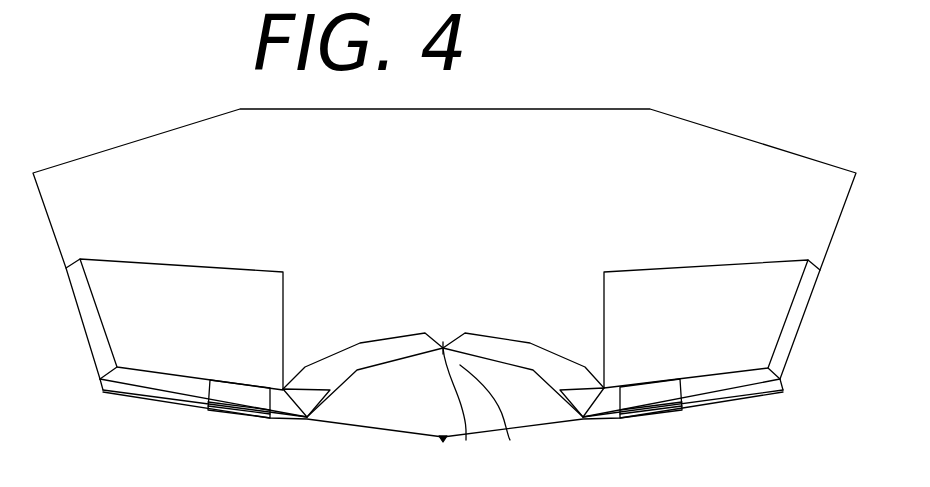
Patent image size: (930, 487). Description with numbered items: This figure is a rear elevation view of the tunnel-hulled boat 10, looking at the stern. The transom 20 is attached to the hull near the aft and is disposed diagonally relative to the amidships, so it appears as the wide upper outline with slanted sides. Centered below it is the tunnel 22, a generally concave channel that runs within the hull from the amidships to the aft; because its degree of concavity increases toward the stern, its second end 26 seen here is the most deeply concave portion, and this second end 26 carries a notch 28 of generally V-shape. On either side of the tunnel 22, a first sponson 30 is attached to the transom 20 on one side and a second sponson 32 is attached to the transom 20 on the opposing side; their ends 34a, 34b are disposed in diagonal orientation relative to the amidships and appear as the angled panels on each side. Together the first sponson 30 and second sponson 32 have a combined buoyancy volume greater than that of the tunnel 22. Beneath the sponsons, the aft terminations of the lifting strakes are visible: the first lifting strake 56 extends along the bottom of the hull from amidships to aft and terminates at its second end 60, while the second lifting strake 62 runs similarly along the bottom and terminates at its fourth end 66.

The tunnel-hulled boat 10 is at (195, 99).
The transom 20 is at (600, 130).
The tunnel 22 is at (428, 418).
The second end 26 is at (510, 440).
The notch 28 is at (466, 440).
The first sponson 30 is at (730, 383).
The second sponson 32 is at (160, 383).
The end of sponson 34a is at (735, 318).
The end of sponson 34b is at (218, 318).
The first lifting strake 56 is at (670, 417).
The second end 60 is at (638, 402).
The second lifting strake 62 is at (213, 413).
The fourth end 66 is at (248, 400).